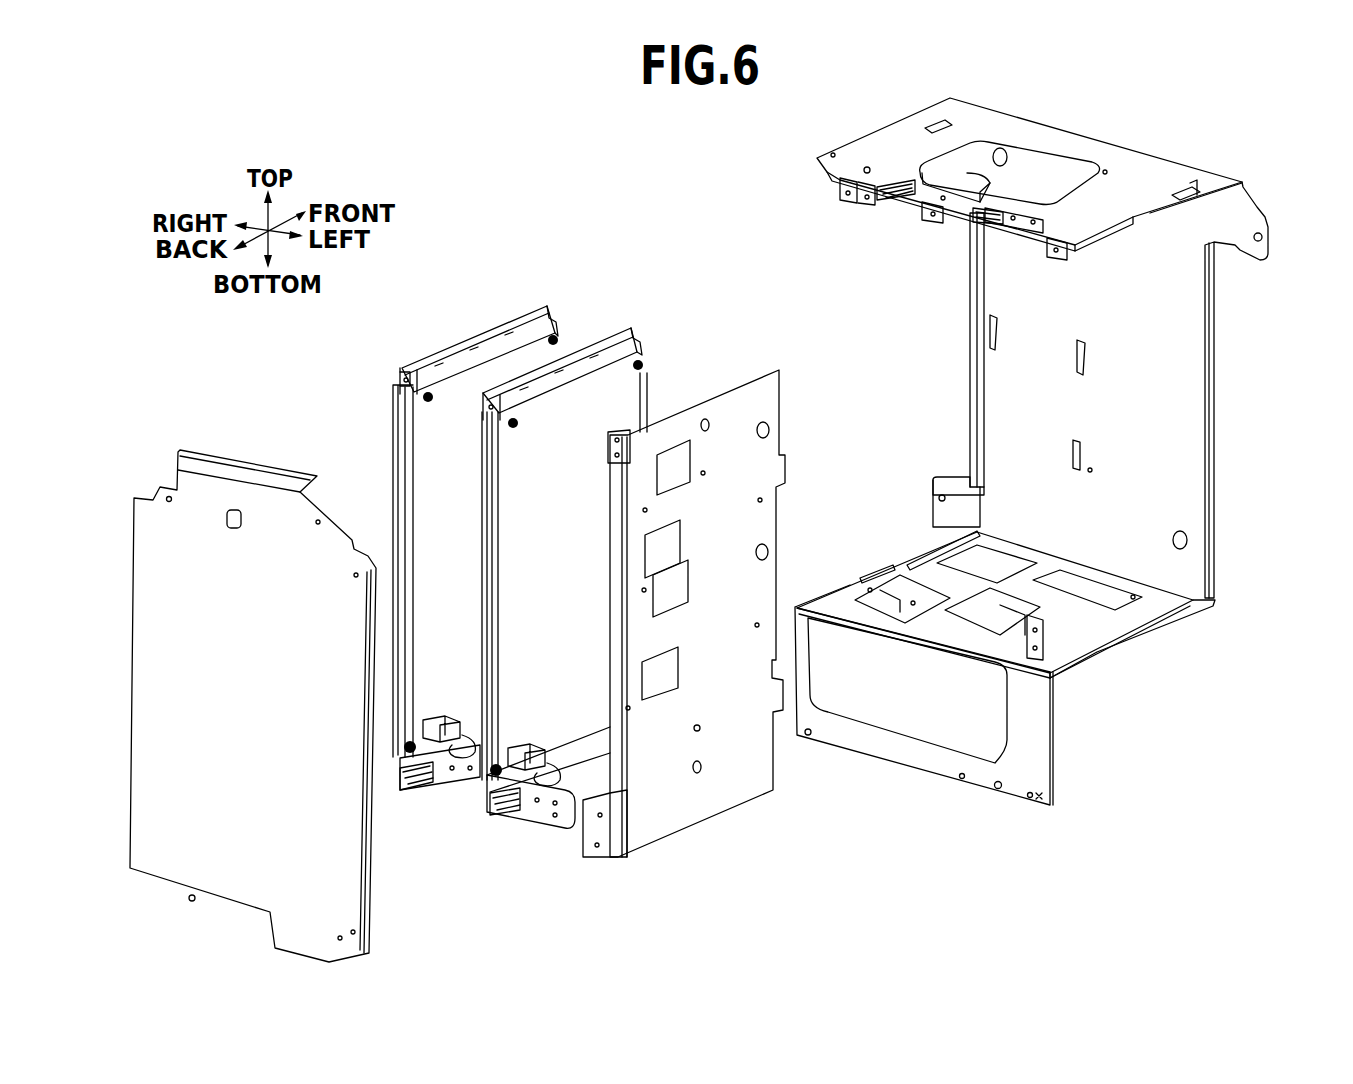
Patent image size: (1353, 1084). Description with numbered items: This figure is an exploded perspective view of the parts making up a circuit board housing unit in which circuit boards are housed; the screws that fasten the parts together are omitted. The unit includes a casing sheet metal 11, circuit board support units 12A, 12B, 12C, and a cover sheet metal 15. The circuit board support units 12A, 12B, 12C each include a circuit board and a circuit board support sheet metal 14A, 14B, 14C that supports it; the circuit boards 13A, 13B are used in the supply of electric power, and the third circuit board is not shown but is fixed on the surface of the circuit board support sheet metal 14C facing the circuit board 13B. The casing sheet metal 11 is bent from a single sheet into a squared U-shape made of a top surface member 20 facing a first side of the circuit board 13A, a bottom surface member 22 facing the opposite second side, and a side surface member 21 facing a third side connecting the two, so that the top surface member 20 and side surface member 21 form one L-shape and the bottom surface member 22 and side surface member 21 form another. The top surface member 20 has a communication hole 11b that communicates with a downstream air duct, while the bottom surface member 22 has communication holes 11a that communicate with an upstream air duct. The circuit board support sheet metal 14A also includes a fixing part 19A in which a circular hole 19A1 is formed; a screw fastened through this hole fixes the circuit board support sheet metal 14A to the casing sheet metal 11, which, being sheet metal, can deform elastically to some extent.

The casing sheet metal 11 is at (1038, 442).
The communication holes 11a is at (923, 607).
The communication hole 11b is at (1045, 150).
The circuit board support unit 12A is at (416, 516).
The circuit board support unit 12B is at (567, 535).
The circuit board support unit 12C is at (720, 577).
The circuit board 13A is at (467, 530).
The circuit board 13B is at (577, 550).
The circuit board support sheet metal 14A is at (443, 373).
The circuit board support sheet metal 14B is at (622, 333).
The circuit board support sheet metal 14C is at (770, 398).
The cover sheet metal 15 is at (218, 495).
The fixing part 19A is at (398, 387).
The circular hole 19A1 is at (398, 373).
The top surface member 20 is at (1029, 169).
The side surface member 21 is at (1183, 438).
The bottom surface member 22 is at (1020, 668).